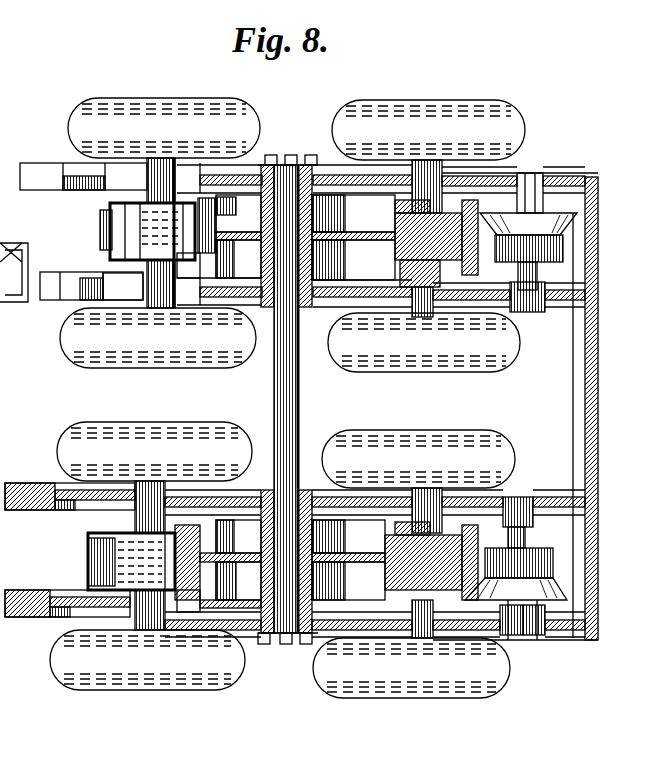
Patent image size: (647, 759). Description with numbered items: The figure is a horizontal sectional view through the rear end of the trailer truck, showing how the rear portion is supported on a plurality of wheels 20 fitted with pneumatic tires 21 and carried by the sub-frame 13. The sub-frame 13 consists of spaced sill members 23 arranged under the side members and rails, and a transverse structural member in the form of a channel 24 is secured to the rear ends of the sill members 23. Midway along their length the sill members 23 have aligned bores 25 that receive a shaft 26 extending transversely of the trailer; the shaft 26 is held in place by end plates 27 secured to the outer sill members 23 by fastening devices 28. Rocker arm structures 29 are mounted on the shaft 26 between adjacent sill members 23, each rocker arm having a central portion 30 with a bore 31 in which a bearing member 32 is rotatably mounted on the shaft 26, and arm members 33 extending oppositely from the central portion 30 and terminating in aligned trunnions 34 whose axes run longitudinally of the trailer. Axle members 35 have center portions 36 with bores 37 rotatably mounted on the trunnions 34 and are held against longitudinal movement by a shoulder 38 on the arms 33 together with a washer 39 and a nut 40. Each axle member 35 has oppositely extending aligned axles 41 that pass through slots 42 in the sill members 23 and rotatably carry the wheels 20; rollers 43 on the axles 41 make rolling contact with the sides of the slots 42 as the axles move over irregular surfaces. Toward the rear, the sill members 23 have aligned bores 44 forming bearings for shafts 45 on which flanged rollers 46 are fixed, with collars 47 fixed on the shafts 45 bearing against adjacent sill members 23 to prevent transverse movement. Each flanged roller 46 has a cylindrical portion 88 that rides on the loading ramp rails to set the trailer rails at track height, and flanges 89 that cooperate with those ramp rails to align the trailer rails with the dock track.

The sub-frame 13 is at (22, 165).
The wheels 20 is at (510, 117).
The pneumatic tires 21 is at (153, 666).
The sill members 23 is at (236, 632).
The channel 24 is at (590, 428).
The aligned bores 25 is at (286, 644).
The shaft 26 is at (300, 399).
The end plates 27 is at (279, 157).
The fastening devices 28 is at (312, 157).
The rocker arm structures 29 is at (258, 268).
The central portion 30 is at (320, 228).
The bore 31 is at (261, 251).
The bearing member 32 is at (262, 206).
The arm members 33 is at (392, 268).
The trunnions 34 is at (100, 226).
The axle members 35 is at (442, 626).
The center portions 36 is at (198, 538).
The bores 37 is at (405, 575).
The shoulder 38 is at (198, 200).
The washer 39 is at (135, 262).
The nut 40 is at (105, 262).
The axles 41 is at (430, 318).
The slots 42 is at (163, 178).
The rollers 43 is at (162, 298).
The aligned bores 44 is at (520, 655).
The shafts 45 is at (532, 632).
The flanged rollers 46 is at (555, 573).
The collars 47 is at (518, 545).
The cylindrical portion 88 is at (565, 253).
The flanges 89 is at (575, 219).